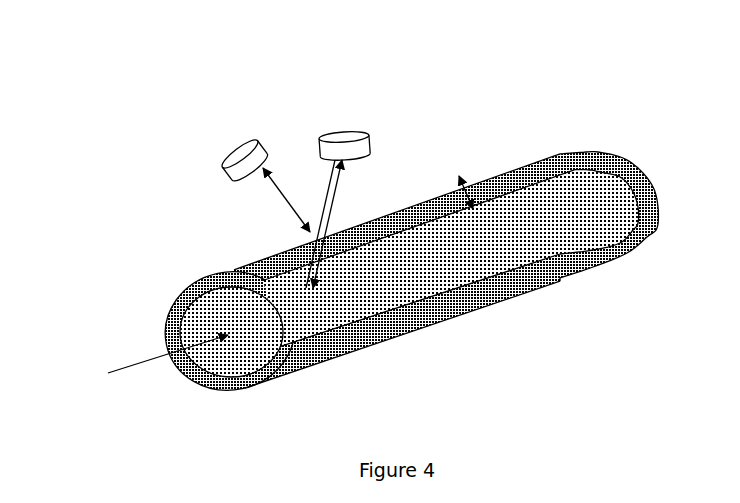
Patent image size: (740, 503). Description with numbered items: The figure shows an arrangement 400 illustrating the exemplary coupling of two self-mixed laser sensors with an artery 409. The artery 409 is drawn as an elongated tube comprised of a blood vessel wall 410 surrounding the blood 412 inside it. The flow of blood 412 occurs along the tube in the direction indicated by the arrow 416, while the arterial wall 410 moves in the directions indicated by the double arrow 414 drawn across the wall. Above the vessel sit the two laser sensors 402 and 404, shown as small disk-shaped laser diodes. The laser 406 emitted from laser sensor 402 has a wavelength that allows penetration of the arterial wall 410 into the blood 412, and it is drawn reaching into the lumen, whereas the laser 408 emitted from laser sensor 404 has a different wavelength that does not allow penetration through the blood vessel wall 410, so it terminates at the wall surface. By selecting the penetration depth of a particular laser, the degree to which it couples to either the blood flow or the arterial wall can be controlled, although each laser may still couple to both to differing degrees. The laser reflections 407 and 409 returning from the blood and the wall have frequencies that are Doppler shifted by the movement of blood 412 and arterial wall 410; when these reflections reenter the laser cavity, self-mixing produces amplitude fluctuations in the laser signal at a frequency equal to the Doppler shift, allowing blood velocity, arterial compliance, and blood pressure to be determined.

The blood flow sensing system 400 is at (603, 90).
The laser sensor 402 is at (347, 130).
The laser sensor 404 is at (237, 148).
The laser 406 is at (342, 183).
The laser reflection 407 is at (323, 190).
The laser 408 is at (267, 195).
The artery 409 is at (283, 153).
The blood vessel wall 410 is at (183, 293).
The blood 412 is at (222, 363).
The directions of arterial wall movement 414 is at (463, 172).
The blood flow direction 416 is at (130, 372).